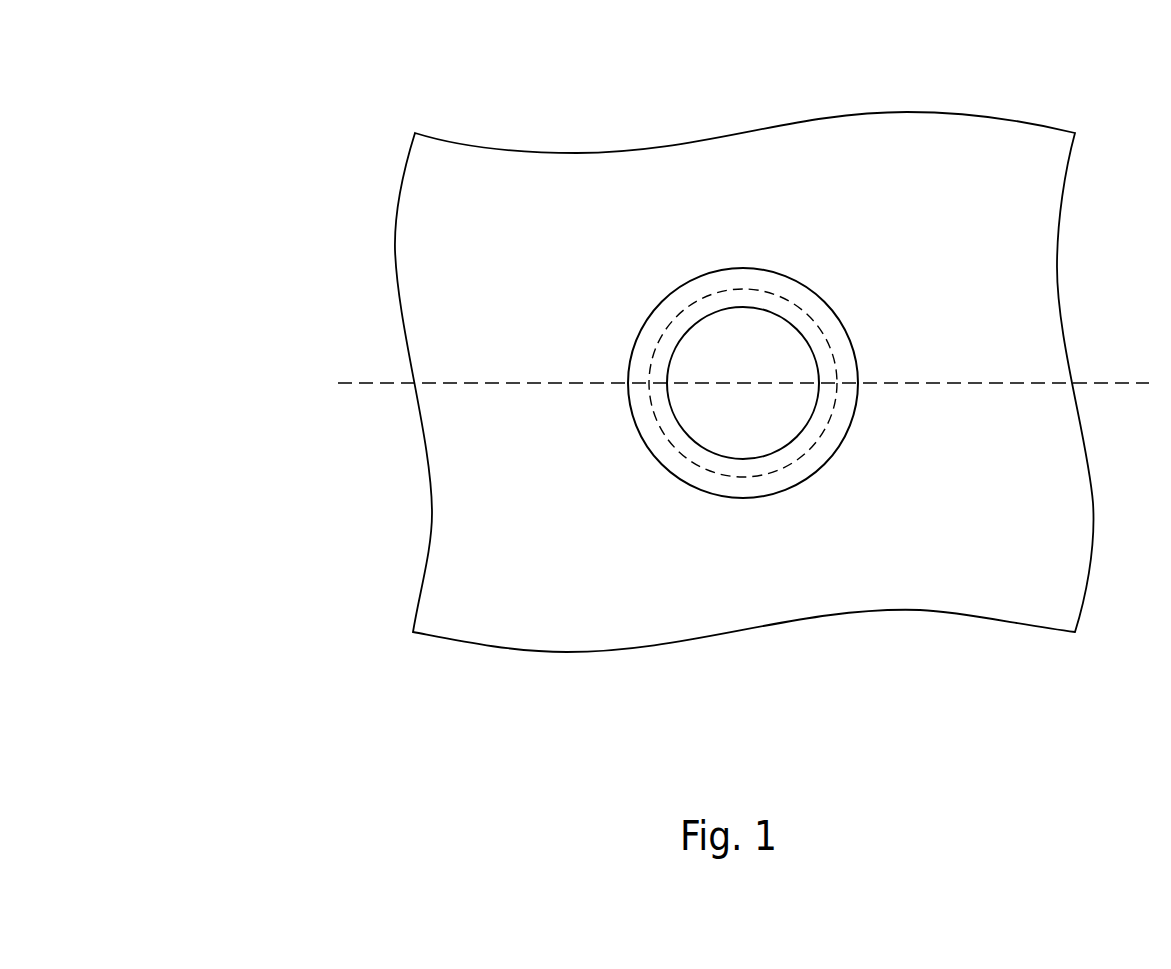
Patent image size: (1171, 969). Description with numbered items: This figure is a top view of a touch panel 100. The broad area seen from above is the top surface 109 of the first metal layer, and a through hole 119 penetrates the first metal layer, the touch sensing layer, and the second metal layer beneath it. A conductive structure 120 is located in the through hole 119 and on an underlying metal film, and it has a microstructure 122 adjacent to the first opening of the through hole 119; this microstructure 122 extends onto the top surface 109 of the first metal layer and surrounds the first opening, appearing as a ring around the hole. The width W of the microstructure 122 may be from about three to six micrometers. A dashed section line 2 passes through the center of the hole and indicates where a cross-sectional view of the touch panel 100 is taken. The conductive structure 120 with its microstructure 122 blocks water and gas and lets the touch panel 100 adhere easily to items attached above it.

The touch panel 100 is at (230, 63).
The top surface of the first metal layer 109 is at (623, 591).
The through hole 119 is at (813, 322).
The conductive structure 120 is at (745, 440).
The microstructure 122 is at (791, 475).
The width of the microstructure W is at (713, 422).
The line 2- 2 is at (338, 384).